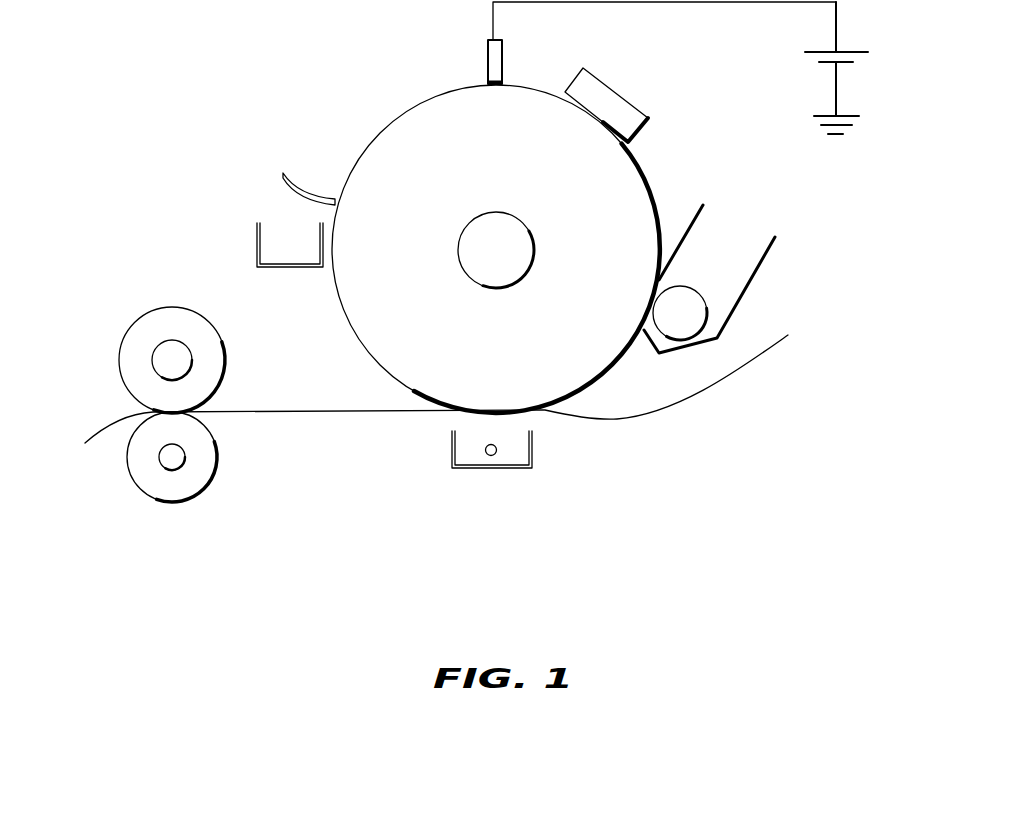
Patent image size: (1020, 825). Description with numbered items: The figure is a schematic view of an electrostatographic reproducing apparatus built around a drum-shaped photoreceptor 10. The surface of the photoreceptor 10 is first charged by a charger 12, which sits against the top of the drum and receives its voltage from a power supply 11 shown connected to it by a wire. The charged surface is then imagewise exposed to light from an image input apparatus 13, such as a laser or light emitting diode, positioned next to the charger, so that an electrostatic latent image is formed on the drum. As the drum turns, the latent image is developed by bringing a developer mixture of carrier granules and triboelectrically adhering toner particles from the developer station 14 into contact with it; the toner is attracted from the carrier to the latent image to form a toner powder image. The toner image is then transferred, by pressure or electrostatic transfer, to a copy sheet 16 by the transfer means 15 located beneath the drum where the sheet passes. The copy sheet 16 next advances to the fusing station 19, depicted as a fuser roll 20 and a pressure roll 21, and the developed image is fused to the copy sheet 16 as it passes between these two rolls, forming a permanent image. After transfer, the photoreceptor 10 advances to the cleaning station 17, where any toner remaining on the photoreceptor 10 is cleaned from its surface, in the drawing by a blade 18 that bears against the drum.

The photoreceptor 10 is at (648, 185).
The power supply 11 is at (838, 28).
The charger 12 is at (490, 66).
The image input apparatus 13 is at (625, 107).
The developer station 14 is at (722, 246).
The transfer means 15 is at (532, 462).
The copy sheet 16 is at (738, 372).
The cleaning station 17 is at (268, 190).
The cleaning blade 18 is at (303, 190).
The fusing station 19 is at (92, 364).
The fuser roll 20 is at (215, 345).
The pressure roll 21 is at (208, 468).